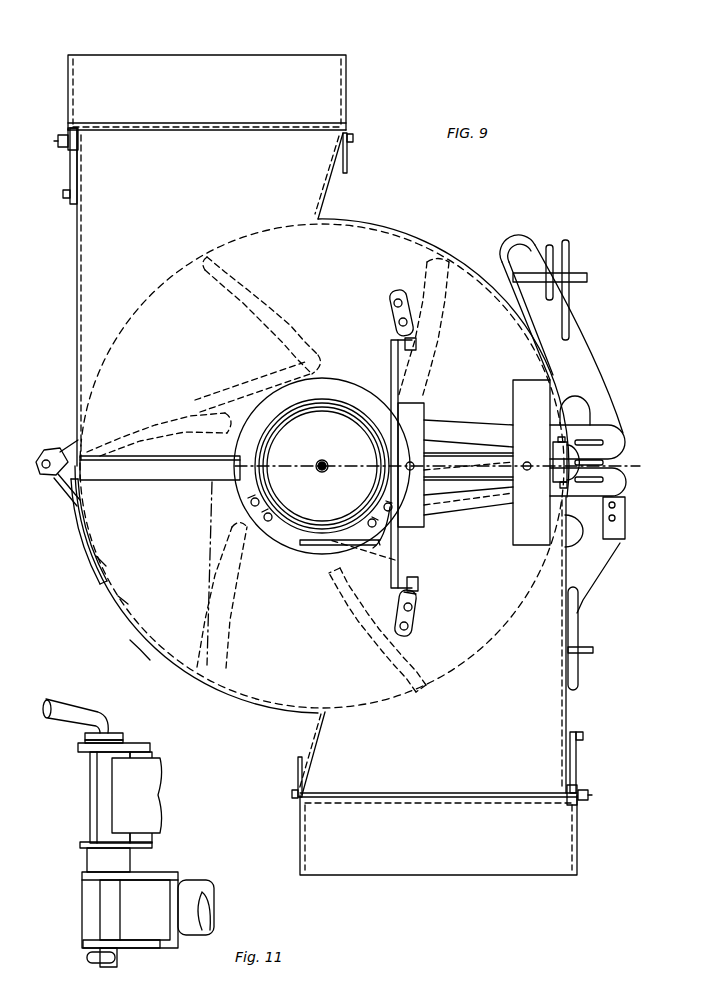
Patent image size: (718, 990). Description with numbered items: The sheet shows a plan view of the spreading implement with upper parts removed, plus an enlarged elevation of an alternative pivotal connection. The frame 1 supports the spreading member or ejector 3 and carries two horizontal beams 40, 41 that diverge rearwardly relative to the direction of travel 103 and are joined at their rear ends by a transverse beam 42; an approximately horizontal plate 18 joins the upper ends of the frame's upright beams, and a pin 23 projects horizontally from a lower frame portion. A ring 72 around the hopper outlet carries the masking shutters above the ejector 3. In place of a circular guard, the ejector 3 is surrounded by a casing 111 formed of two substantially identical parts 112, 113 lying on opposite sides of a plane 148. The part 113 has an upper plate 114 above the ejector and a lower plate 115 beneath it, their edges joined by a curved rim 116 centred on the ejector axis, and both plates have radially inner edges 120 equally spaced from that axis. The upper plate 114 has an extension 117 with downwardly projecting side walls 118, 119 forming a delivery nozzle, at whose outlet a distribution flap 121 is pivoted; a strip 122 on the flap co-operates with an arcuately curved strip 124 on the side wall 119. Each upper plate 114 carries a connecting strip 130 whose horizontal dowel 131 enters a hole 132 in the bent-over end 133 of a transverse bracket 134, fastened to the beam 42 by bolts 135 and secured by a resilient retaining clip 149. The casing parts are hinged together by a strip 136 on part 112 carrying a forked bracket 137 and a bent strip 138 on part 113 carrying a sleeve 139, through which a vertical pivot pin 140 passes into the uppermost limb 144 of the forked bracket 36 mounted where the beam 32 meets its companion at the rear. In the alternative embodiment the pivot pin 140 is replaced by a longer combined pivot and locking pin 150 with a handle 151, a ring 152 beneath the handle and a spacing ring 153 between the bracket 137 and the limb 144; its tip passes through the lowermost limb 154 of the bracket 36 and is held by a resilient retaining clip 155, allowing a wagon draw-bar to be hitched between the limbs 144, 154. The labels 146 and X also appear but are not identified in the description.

In FIG. 9, the frame 1 is at (592, 566).
In FIG. 9, the spreading member or ejector 3 is at (284, 318).
In FIG. 9, the horizontal plate 18 is at (512, 541).
In FIG. 9, the pin 23 is at (571, 256).
In FIG. 11, the beam 32 is at (204, 882).
In FIG. 11, the forked bracket 36 is at (162, 870).
In FIG. 9, the beam 40 is at (498, 506).
In FIG. 9, the beam 41 is at (490, 426).
In FIG. 9, the transverse beam 42 is at (430, 412).
In FIG. 9, the ring 72 is at (342, 408).
In FIG. 9, the intended direction of travel 103 is at (592, 200).
In FIG. 9, the casing 111 is at (140, 642).
In FIG. 9, the part of casing 112 is at (427, 239).
In FIG. 9, the part of casing 113 is at (104, 616).
In FIG. 9, the upper plate 114 is at (101, 561).
In FIG. 9, the lower plate 115 is at (398, 701).
In FIG. 9, the curved rim 116 is at (188, 673).
In FIG. 9, the extension 117 is at (458, 800).
In FIG. 9, the side wall 118 is at (333, 185).
In FIG. 9, the side wall 119 is at (77, 300).
In FIG. 9, the radially inner edges 120 is at (262, 398).
In FIG. 9, the distribution flap 121 is at (208, 64).
In FIG. 9, the strip 122 is at (68, 128).
In FIG. 9, the arcuately curved strip 124 is at (68, 180).
In FIG. 9, the connecting strip 130 is at (395, 305).
In FIG. 9, the dowel 131 is at (416, 352).
In FIG. 9, the hole 132 is at (420, 599).
In FIG. 9, the bent-over end 133 is at (395, 624).
In FIG. 9, the transverse bracket 134 is at (404, 551).
In FIG. 9, the bolts 135 is at (372, 422).
In FIG. 9, the strip 136 is at (78, 440).
In FIG. 9, the forked bracket 137 is at (42, 470).
In FIG. 11, the forked bracket 137 is at (145, 747).
In FIG. 9, the bent strip 138 is at (78, 508).
In FIG. 11, the bent strip 138 is at (160, 790).
In FIG. 11, the sleeve 139 is at (90, 782).
In FIG. 9, the pivot pin 140 is at (45, 478).
In FIG. 11, the uppermost limb 144 is at (86, 878).
In FIG. 9, the bolt 146 is at (58, 143).
In FIG. 9, the plane 148 is at (648, 470).
In FIG. 9, the resilient retaining clip 149 is at (420, 585).
In FIG. 11, the combined pivot pin and locking pin 150 is at (112, 722).
In FIG. 11, the handle 151 is at (80, 742).
In FIG. 11, the ring 152 is at (76, 750).
In FIG. 11, the spacing ring 153 is at (87, 860).
In FIG. 11, the lowermost limb 154 is at (117, 960).
In FIG. 11, the resilient retaining clip 155 is at (87, 962).
In FIG. 9, the direction arrow X is at (604, 776).